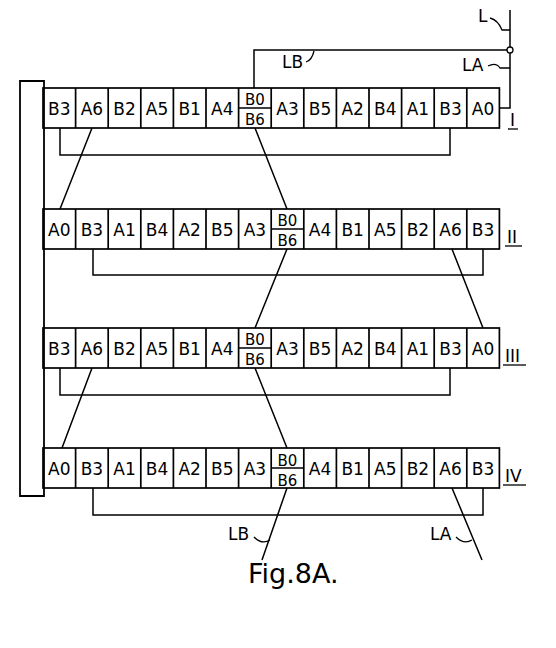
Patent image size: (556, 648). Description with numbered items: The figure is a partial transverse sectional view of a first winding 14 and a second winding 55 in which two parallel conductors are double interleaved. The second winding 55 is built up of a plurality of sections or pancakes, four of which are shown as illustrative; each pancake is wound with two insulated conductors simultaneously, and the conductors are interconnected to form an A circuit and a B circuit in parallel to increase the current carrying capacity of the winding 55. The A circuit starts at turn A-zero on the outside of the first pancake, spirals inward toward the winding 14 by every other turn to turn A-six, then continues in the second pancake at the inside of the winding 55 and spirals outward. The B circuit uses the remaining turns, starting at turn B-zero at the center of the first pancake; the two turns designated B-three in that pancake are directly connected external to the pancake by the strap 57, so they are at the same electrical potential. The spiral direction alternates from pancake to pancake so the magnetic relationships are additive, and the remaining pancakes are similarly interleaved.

The first winding 14 is at (34, 75).
The second winding 55 is at (362, 40).
The strap 57 is at (368, 163).